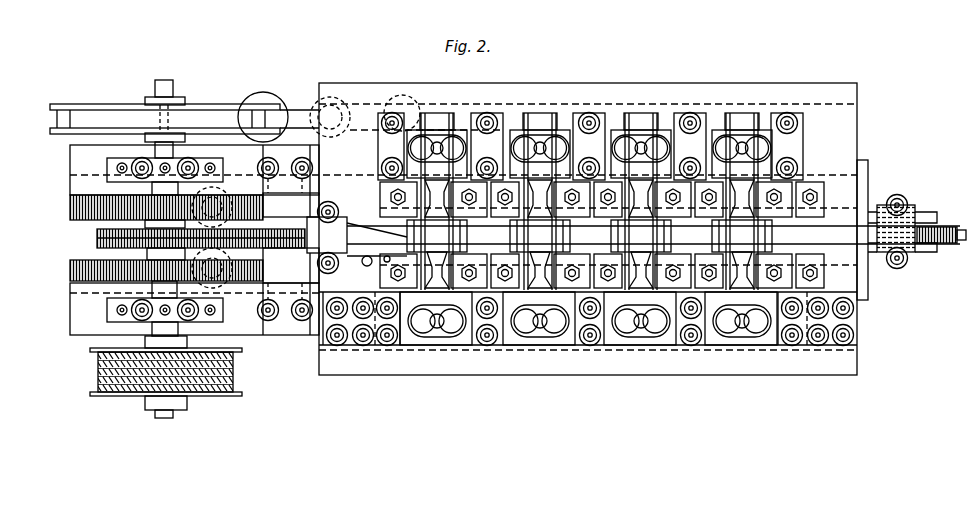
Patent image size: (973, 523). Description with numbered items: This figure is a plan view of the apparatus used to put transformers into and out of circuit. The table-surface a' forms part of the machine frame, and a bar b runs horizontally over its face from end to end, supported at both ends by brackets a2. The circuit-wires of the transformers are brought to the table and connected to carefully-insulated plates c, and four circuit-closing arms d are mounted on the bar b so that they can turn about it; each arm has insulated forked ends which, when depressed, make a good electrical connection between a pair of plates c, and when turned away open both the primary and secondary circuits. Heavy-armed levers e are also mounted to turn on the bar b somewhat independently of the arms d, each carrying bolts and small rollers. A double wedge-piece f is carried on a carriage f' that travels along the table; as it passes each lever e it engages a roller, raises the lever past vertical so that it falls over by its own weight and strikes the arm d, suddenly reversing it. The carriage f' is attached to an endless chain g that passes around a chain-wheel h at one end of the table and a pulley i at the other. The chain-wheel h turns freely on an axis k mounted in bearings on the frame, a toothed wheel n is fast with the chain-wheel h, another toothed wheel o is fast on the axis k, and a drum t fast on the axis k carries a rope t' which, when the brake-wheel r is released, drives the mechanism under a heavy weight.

The table-surface a' is at (463, 229).
The brackets a2 is at (622, 230).
The bar b is at (818, 231).
The insulated plates c is at (759, 168).
The circuit-closing arms d is at (589, 234).
The heavy-armed levers e is at (413, 163).
The double wedge-piece f is at (384, 270).
The carriage f' is at (360, 268).
The endless chain g is at (230, 240).
The chain-wheel h is at (193, 240).
The pulley i is at (946, 226).
The axis k is at (166, 240).
The toothed wheel n is at (156, 271).
The toothed wheel o is at (157, 207).
The brake-wheel r is at (200, 116).
The drum t is at (156, 372).
The rope t' is at (152, 382).